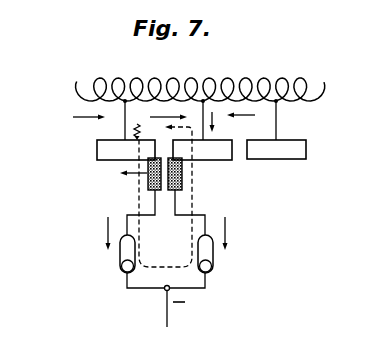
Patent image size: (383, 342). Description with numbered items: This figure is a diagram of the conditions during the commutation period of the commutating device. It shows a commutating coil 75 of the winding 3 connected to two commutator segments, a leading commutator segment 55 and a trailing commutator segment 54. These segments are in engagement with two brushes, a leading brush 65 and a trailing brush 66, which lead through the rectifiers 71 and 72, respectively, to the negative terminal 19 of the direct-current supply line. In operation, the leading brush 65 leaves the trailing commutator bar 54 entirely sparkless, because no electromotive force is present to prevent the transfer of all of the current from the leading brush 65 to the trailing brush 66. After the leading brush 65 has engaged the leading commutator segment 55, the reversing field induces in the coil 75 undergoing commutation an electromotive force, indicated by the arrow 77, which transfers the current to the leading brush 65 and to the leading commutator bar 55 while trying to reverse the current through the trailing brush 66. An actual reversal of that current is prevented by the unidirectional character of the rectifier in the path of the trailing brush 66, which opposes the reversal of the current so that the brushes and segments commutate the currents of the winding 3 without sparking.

The winding 3 is at (118, 80).
The commutating coil 75 is at (172, 80).
The leading commutator segment 55 is at (100, 148).
The trailing commutator segment 54 is at (212, 158).
The leading brush 65 is at (147, 179).
The trailing brush 66 is at (183, 179).
The rectifier 71 is at (120, 258).
The rectifier 72 is at (213, 258).
The electromotive force arrow 77 is at (185, 266).
The negative terminal 19 is at (164, 291).